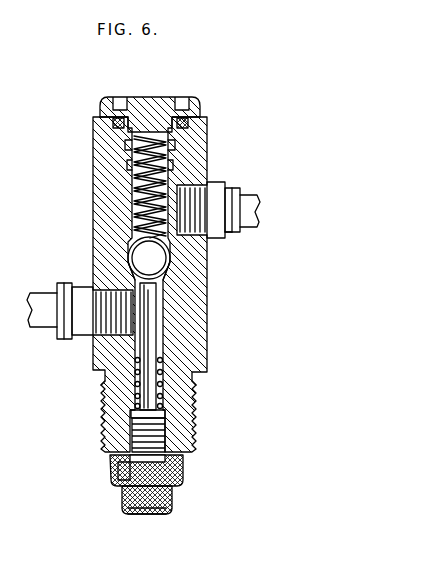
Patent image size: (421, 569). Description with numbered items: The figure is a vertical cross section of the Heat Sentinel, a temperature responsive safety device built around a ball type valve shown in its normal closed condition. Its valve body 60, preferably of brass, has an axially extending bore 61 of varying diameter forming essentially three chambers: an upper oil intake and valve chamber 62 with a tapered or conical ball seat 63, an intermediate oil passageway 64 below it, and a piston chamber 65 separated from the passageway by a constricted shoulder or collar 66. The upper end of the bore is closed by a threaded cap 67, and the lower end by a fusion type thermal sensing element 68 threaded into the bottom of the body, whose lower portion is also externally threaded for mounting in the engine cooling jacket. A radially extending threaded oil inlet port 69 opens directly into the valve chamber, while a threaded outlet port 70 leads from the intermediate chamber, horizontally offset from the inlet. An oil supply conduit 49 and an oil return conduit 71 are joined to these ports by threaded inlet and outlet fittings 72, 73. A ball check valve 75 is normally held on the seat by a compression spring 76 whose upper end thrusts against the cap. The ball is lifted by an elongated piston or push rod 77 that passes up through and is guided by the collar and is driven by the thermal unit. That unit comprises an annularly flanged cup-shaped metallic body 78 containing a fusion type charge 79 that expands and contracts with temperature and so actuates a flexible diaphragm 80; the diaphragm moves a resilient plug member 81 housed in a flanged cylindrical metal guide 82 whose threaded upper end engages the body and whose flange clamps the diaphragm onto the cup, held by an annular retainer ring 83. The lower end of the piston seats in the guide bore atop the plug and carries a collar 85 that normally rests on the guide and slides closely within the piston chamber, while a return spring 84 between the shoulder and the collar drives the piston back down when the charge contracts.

The oil supply conduit 49 is at (247, 200).
The valve body 60 is at (106, 172).
The axially extending bore 61 is at (121, 211).
The oil intake and valve chamber 62 is at (133, 226).
The ball seat 63 is at (168, 268).
The intermediate oil passageway 64 is at (158, 300).
The piston chamber 65 is at (163, 370).
The constricted shoulder or collar 66 is at (163, 354).
The threaded cap 67 is at (148, 110).
The thermal sensing element 68 is at (153, 487).
The oil inlet port 69 is at (207, 195).
The outlet port 70 is at (104, 277).
The oil return conduit 71 is at (50, 300).
The inlet fitting 72 is at (216, 226).
The outlet fitting 73 is at (88, 286).
The ball check valve 75 is at (149, 258).
The compression spring 76 is at (183, 147).
The piston or push rod 77 is at (146, 322).
The cup-shaped metallic body 78 is at (136, 512).
The fusion type charge 79 is at (170, 502).
The flexible diaphragm 80 is at (172, 487).
The resilient plug member 81 is at (165, 468).
The flanged cylindrical metal guide 82 is at (135, 428).
The annular retainer ring 83 is at (120, 470).
The return spring 84 is at (196, 400).
The collar 85 is at (131, 413).